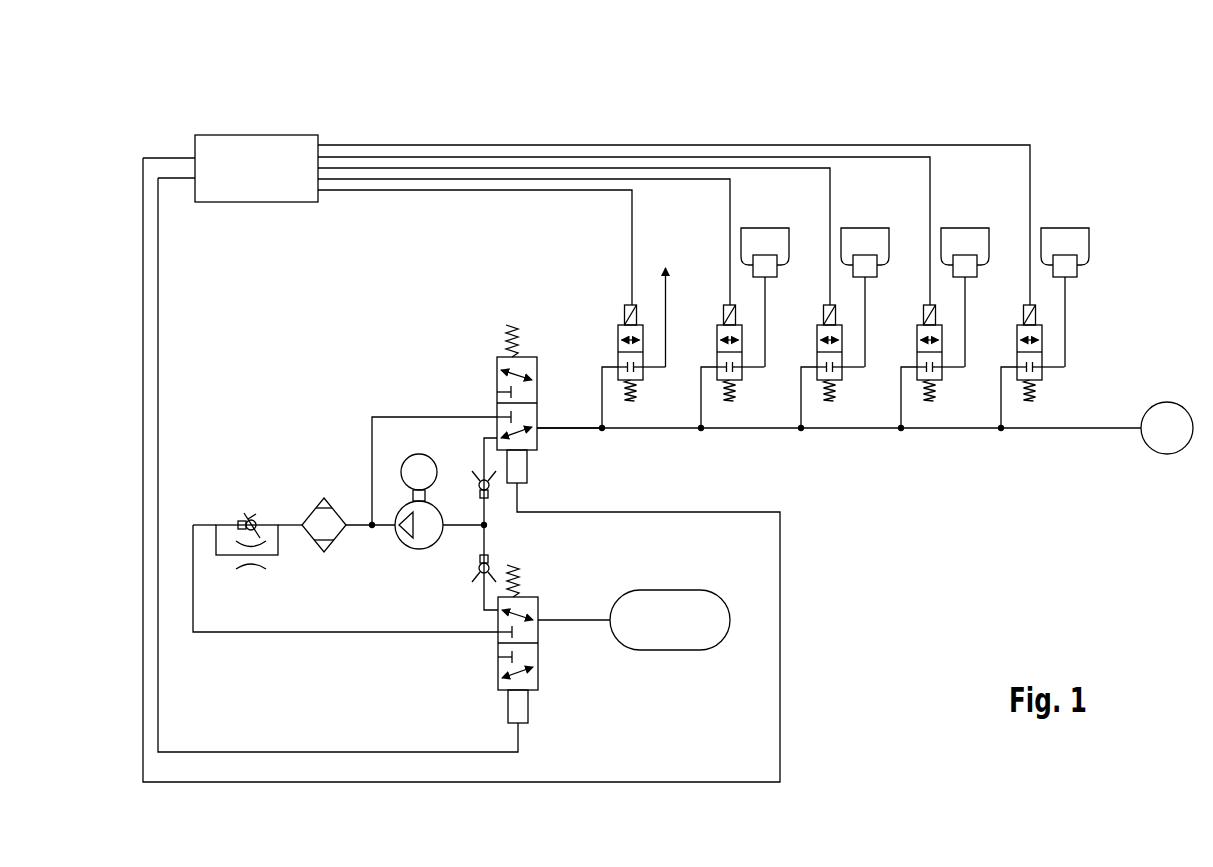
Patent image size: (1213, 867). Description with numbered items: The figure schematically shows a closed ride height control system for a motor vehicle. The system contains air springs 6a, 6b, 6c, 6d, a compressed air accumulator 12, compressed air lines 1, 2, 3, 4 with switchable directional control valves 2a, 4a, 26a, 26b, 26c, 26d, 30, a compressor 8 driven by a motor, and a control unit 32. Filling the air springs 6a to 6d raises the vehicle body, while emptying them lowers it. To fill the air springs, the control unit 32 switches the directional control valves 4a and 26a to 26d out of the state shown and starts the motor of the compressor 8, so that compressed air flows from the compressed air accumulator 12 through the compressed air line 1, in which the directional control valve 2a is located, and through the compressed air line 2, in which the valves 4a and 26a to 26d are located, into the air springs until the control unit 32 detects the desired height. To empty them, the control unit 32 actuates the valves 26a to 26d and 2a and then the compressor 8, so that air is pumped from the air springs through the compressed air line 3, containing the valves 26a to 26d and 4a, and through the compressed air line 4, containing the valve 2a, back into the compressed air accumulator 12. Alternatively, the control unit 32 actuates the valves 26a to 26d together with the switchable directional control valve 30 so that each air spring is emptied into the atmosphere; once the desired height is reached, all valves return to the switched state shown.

The control unit 32 is at (251, 140).
The switchable directional control valve 30 is at (618, 341).
The switchable directional control valve 26a is at (717, 341).
The switchable directional control valve 26b is at (817, 341).
The switchable directional control valve 26c is at (917, 341).
The switchable directional control valve 26d is at (1017, 341).
The air spring 6a is at (765, 228).
The air spring 6b is at (865, 228).
The air spring 6c is at (965, 228).
The air spring 6d is at (1065, 228).
The switchable directional control valve 4a is at (537, 380).
The compressed air line 3 is at (497, 440).
The compressed air line 2 is at (403, 417).
The compressor 8 is at (410, 548).
The compressed air line 4 is at (350, 632).
The compressed air line 1 is at (484, 594).
The switchable directional control valve 2a is at (538, 668).
The compressed air accumulator 12 is at (670, 647).